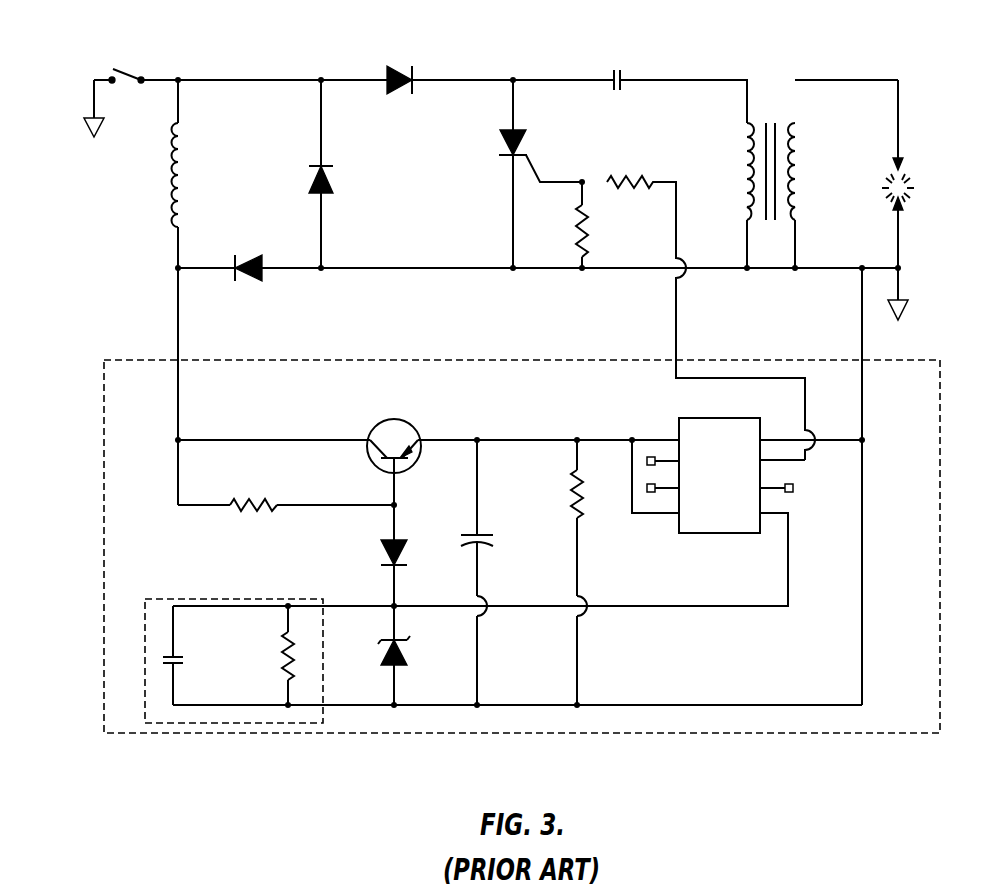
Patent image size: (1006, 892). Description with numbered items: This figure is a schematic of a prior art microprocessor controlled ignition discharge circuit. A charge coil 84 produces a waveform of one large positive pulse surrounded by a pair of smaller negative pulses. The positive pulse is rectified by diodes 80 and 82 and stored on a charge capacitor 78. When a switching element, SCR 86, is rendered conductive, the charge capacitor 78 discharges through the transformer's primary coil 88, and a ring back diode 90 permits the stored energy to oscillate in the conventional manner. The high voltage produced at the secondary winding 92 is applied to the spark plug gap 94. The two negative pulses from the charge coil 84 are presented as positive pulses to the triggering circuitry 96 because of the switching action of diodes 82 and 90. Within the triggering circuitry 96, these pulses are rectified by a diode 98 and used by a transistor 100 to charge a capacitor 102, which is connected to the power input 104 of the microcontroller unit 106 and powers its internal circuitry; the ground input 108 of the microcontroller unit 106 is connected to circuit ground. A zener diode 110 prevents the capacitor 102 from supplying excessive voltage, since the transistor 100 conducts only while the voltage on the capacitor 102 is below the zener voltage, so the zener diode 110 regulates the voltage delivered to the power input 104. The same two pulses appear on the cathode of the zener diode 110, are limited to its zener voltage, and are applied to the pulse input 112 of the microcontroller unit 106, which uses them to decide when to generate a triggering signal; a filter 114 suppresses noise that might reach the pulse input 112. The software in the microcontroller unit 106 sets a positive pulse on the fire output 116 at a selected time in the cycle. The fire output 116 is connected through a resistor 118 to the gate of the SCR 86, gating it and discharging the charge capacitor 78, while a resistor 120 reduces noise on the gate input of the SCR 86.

The charge capacitor 78 is at (614, 72).
The diode 80 is at (398, 64).
The diode 82 is at (261, 283).
The charge coil 84 is at (170, 181).
The SCR 86 is at (505, 133).
The primary coil 88 is at (745, 178).
The ring back diode 90 is at (330, 158).
The secondary winding 92 is at (797, 178).
The spark plug gap 94 is at (906, 174).
The triggering circuitry 96 is at (152, 358).
The diode 98 is at (386, 543).
The transistor 100 is at (378, 420).
The capacitor 102 is at (482, 531).
The power input 104 is at (672, 437).
The microcontroller unit 106 is at (715, 417).
The ground input 108 is at (763, 437).
The zener diode 110 is at (382, 665).
The pulse input 112 is at (755, 517).
The filter 114 is at (195, 598).
The fire output 116 is at (763, 464).
The resistor 118 is at (615, 178).
The resistor 120 is at (577, 245).